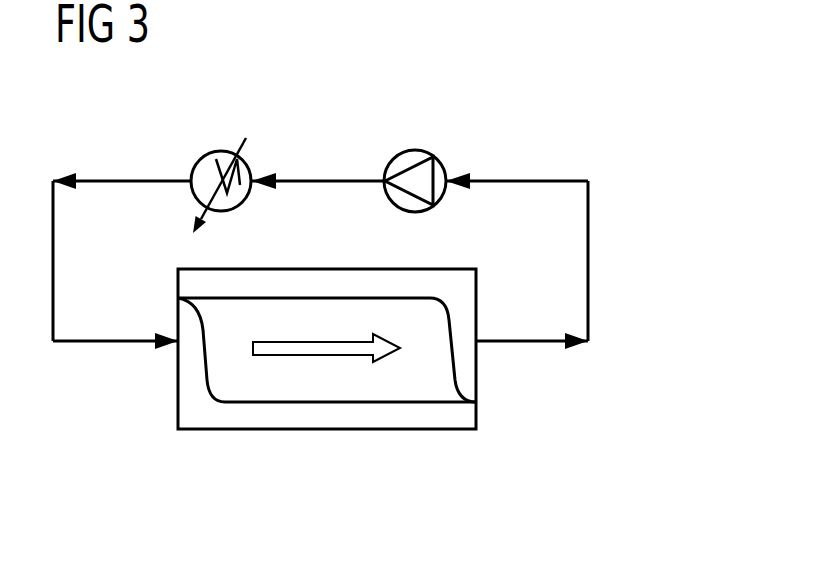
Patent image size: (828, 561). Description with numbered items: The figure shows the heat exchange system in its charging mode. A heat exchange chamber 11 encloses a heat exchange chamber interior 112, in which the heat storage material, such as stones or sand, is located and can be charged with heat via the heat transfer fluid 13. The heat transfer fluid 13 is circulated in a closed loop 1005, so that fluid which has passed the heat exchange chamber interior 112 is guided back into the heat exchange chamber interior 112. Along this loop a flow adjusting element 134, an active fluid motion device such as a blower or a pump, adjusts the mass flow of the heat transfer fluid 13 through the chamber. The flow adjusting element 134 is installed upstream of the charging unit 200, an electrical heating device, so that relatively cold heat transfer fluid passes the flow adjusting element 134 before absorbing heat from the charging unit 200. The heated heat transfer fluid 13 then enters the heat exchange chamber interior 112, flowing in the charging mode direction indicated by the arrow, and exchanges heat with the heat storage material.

The closed loop 1005 is at (588, 258).
The charging unit 200 is at (220, 150).
The flow adjusting element 134 is at (422, 150).
The heat exchange chamber 11 is at (477, 373).
The heat exchange chamber interior 112 is at (187, 407).
The heat transfer fluid 13 is at (315, 347).